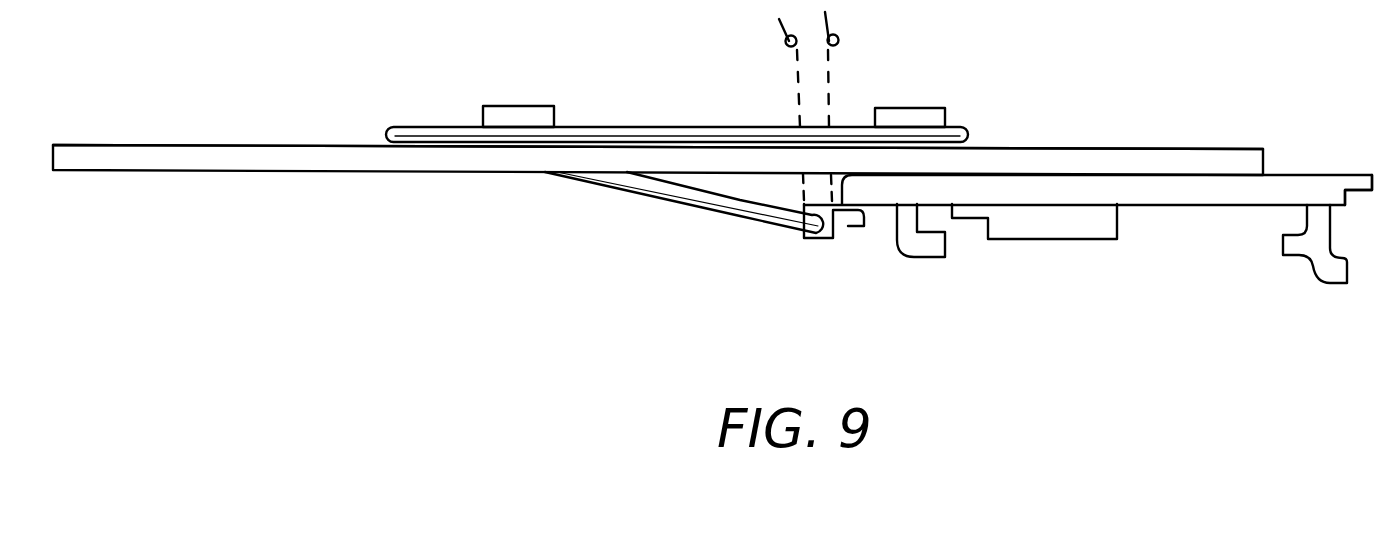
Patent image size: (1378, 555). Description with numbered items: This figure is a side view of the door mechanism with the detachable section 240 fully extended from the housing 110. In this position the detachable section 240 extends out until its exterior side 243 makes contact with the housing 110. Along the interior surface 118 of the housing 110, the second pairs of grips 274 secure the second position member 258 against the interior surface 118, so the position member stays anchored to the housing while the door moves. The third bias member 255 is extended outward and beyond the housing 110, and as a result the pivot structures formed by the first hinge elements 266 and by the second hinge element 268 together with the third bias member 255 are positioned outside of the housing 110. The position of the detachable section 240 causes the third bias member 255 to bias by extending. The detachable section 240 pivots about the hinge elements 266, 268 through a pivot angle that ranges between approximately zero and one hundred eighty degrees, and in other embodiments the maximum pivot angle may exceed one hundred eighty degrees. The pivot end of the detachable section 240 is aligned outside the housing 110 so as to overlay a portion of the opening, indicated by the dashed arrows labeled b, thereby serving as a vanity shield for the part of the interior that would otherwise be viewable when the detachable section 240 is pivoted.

The housing 110 is at (658, 173).
The interior surface 118 is at (222, 145).
The detachable section 240 is at (1088, 221).
The exterior side 243 is at (1313, 175).
The third bias member 255 is at (697, 200).
The second position member 258 is at (672, 127).
The first hinge elements 266 is at (894, 277).
The second hinge element 268 is at (830, 238).
The second pairs of grips 274 is at (513, 106).